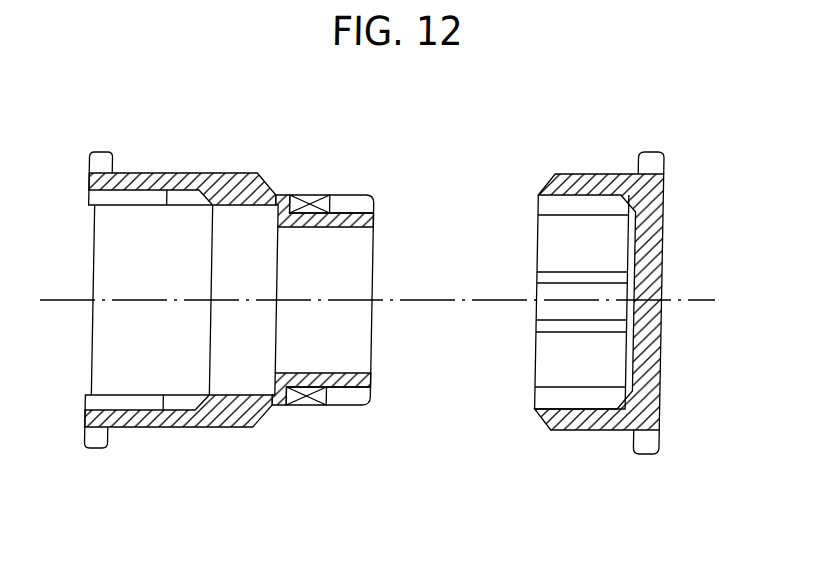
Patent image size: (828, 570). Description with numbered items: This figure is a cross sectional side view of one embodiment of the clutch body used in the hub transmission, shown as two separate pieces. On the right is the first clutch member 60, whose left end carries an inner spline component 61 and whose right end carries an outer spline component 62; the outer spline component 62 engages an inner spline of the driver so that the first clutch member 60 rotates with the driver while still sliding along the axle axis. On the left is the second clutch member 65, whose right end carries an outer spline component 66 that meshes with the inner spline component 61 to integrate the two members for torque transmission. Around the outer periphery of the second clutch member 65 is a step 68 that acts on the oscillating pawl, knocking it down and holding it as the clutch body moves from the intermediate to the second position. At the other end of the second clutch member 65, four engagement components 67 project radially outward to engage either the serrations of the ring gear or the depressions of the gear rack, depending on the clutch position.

The first clutch member 60 is at (589, 176).
The inner spline component 61 is at (571, 207).
The outer spline component 62 is at (649, 162).
The second clutch member 65 is at (235, 175).
The outer spline component 66 is at (366, 200).
The engagement components 67 is at (98, 163).
The step 68 is at (264, 190).